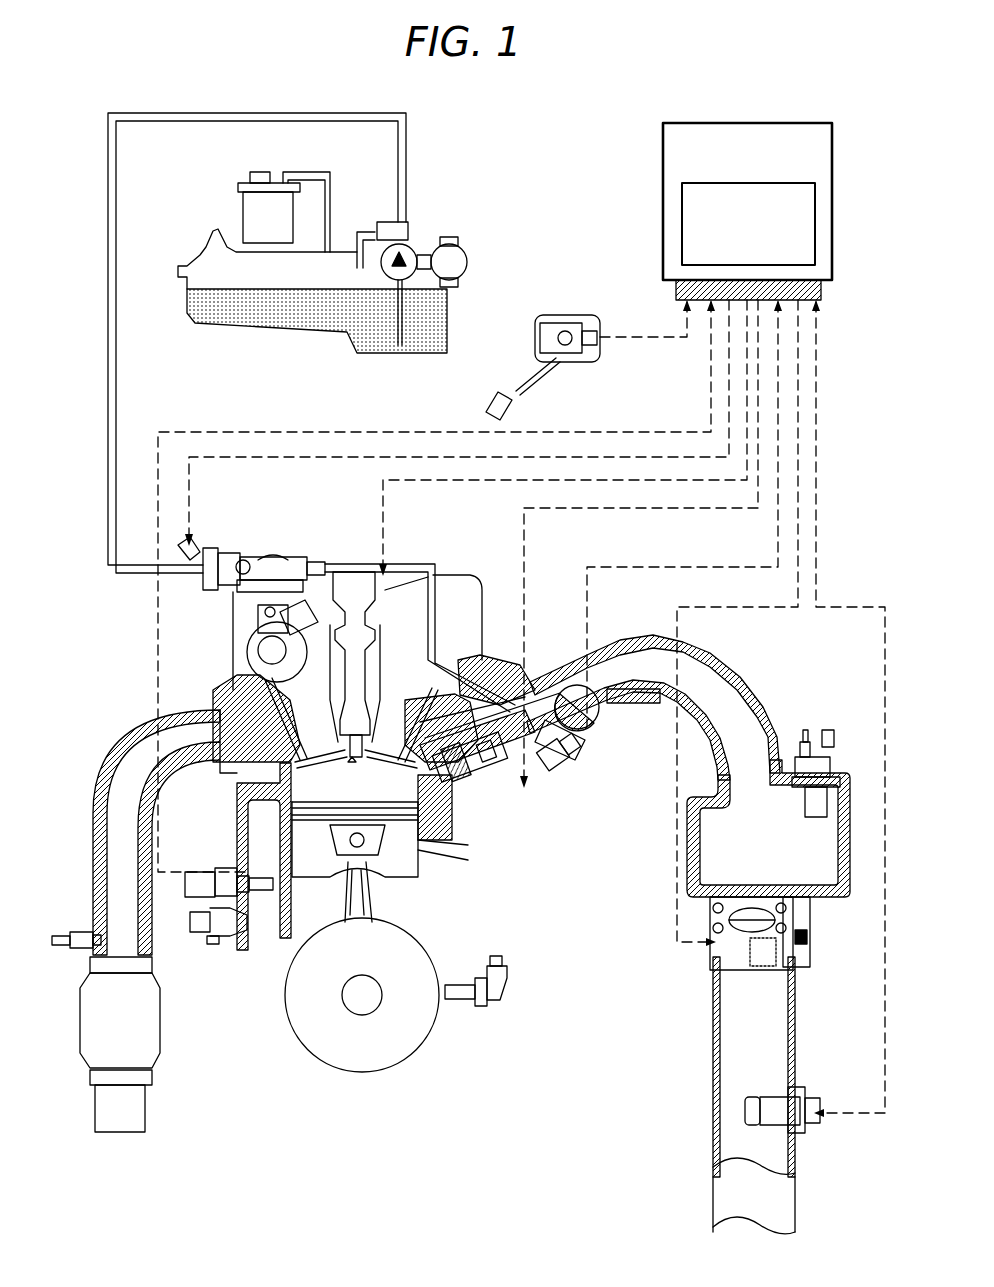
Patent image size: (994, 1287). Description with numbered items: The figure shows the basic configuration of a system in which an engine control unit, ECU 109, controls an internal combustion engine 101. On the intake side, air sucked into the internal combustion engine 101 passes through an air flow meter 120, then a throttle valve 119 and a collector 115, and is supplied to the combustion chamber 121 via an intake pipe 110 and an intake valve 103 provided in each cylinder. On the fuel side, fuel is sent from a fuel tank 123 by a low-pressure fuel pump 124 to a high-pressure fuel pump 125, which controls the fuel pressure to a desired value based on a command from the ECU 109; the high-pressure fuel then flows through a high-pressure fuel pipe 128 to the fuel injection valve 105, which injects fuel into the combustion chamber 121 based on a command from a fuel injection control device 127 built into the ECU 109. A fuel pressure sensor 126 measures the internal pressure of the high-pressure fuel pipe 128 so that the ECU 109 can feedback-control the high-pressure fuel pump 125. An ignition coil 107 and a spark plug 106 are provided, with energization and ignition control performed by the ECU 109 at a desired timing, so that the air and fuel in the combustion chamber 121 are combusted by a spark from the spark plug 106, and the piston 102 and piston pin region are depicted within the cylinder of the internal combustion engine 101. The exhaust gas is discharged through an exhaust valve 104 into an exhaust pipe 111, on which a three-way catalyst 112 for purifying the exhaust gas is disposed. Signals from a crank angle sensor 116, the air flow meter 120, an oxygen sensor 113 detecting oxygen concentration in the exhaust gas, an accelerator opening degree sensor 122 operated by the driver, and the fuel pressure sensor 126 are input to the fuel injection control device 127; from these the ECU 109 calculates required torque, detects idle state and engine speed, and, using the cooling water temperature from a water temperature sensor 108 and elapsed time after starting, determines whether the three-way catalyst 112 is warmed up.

The internal combustion engine 101 is at (452, 825).
The piston 102 is at (392, 853).
The intake valve 103 is at (393, 768).
The exhaust valve 104 is at (308, 768).
The fuel injection valve 105 is at (476, 774).
The spark plug 106 is at (352, 758).
The ignition coil 107 is at (356, 575).
The water temperature sensor 108 is at (262, 892).
The engine control unit (ECU) 109 is at (700, 152).
The intake pipe 110 is at (545, 685).
The exhaust pipe 111 is at (120, 750).
The three-way catalyst 112 is at (152, 1043).
The oxygen sensor 113 is at (68, 935).
The collector 115 is at (768, 813).
The crank angle sensor 116 is at (497, 992).
The throttle valve 119 is at (812, 962).
The air flow meter (AFM) 120 is at (818, 1125).
The combustion chamber 121 is at (370, 812).
The accelerator opening degree sensor 122 is at (562, 320).
The fuel tank 123 is at (330, 322).
The low-pressure fuel pump 124 is at (432, 247).
The high-pressure fuel pump 125 is at (273, 553).
The fuel pressure sensor 126 is at (585, 760).
The fuel injection control device 127 is at (680, 246).
The high-pressure fuel pipe 128 is at (398, 568).